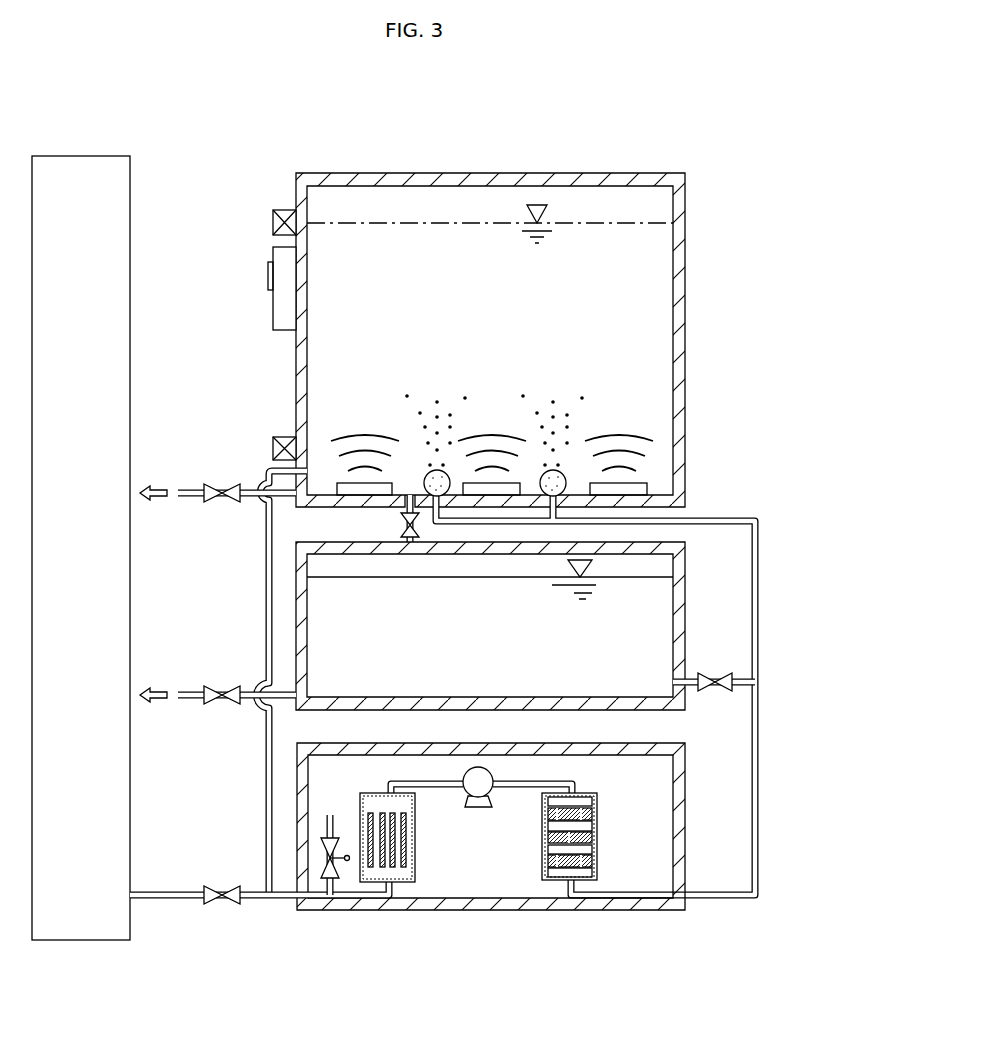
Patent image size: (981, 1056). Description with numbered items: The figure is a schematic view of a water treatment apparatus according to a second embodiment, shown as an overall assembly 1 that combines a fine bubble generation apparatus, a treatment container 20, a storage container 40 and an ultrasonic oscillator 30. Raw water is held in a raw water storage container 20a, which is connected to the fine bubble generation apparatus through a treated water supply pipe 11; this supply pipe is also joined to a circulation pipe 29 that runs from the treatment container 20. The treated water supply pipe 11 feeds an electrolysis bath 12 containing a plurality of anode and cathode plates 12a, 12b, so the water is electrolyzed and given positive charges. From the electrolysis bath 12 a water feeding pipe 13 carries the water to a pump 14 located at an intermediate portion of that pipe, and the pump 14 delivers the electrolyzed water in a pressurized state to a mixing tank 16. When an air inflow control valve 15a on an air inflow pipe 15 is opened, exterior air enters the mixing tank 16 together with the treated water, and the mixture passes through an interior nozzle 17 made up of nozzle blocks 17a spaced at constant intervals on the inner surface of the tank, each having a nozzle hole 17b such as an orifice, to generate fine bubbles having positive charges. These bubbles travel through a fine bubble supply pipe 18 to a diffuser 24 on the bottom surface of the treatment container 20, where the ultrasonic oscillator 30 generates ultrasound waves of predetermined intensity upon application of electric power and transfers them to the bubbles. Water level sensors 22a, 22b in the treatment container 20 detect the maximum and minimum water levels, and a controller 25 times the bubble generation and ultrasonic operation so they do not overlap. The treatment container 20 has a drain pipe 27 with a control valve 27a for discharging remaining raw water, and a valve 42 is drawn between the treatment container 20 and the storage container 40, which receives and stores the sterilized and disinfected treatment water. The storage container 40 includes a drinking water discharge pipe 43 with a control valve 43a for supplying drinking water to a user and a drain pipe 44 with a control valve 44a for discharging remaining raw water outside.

The water treatment apparatus housing 1 is at (340, 926).
The treated water supply pipe 11 is at (282, 897).
The electrolysis bath 12 is at (382, 882).
The anode plate 12a is at (398, 870).
The cathode plate 12b is at (417, 882).
The water feeding pipe 13 is at (432, 787).
The pump 14 is at (478, 797).
The air inflow pipe 15 is at (328, 827).
The air inflow control valve 15a is at (322, 858).
The mixing tank 16 is at (602, 888).
The interior nozzle 17 is at (580, 898).
The nozzle block 17a is at (583, 870).
The nozzle hole 17b is at (553, 870).
The fine bubble supply pipe 18 is at (737, 897).
The treatment container 20 is at (682, 263).
The raw water storage container 20a is at (65, 157).
The water level sensor 22a is at (285, 210).
The water level sensor 22b is at (283, 437).
The diffuser 24 is at (557, 478).
The controller 25 is at (280, 305).
The drain pipe 27 is at (248, 490).
The control valve 27a is at (222, 503).
The circulation pipe 29 is at (266, 650).
The ultrasonic oscillator 30 is at (643, 488).
The storage container 40 is at (680, 582).
The transfer valve 42 is at (400, 525).
The drinking water discharge pipe 43 is at (747, 680).
The control valve 43a is at (715, 675).
The drain pipe 44 is at (190, 698).
The control valve 44a is at (222, 706).